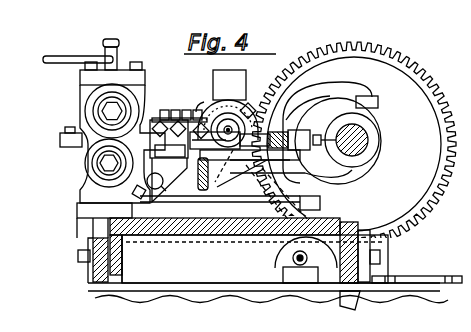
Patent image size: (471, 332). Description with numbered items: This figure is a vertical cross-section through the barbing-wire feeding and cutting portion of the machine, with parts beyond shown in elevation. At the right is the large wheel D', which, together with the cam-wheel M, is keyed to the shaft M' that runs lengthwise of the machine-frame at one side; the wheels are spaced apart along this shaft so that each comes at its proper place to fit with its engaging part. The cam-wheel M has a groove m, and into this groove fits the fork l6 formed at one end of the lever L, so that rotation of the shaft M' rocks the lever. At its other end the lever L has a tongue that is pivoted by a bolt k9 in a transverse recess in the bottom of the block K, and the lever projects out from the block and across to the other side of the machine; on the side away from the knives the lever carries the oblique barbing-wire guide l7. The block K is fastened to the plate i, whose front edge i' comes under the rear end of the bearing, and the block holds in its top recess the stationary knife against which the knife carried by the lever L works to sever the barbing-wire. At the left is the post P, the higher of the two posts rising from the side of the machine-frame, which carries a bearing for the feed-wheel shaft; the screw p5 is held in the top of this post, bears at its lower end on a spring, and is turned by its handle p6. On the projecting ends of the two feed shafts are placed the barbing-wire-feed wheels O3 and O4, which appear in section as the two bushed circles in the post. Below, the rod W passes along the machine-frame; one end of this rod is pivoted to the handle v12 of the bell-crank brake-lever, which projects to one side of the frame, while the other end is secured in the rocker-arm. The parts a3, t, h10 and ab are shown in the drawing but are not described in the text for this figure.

The wheel D' is at (354, 144).
The cam-wheel M is at (338, 141).
The shaft M' is at (360, 140).
The lever L is at (301, 132).
The groove m is at (378, 100).
The fork l6 is at (326, 96).
The bearing cap a3 is at (228, 105).
The plate i is at (239, 153).
The front edge i' is at (254, 186).
The oblique barbing-wire guide l7 is at (300, 150).
The barbing-wire-feed wheel O4 is at (128, 102).
The block K is at (203, 152).
The bolt k9 is at (163, 186).
The slide plate t is at (230, 204).
The post P is at (80, 100).
The barbing-wire-feed wheel O3 is at (90, 176).
The stop h10 is at (133, 193).
The screw p5 is at (110, 39).
The handle p6 is at (60, 56).
The base cavity ab is at (205, 232).
The rod W is at (300, 265).
The handle v12 is at (412, 275).